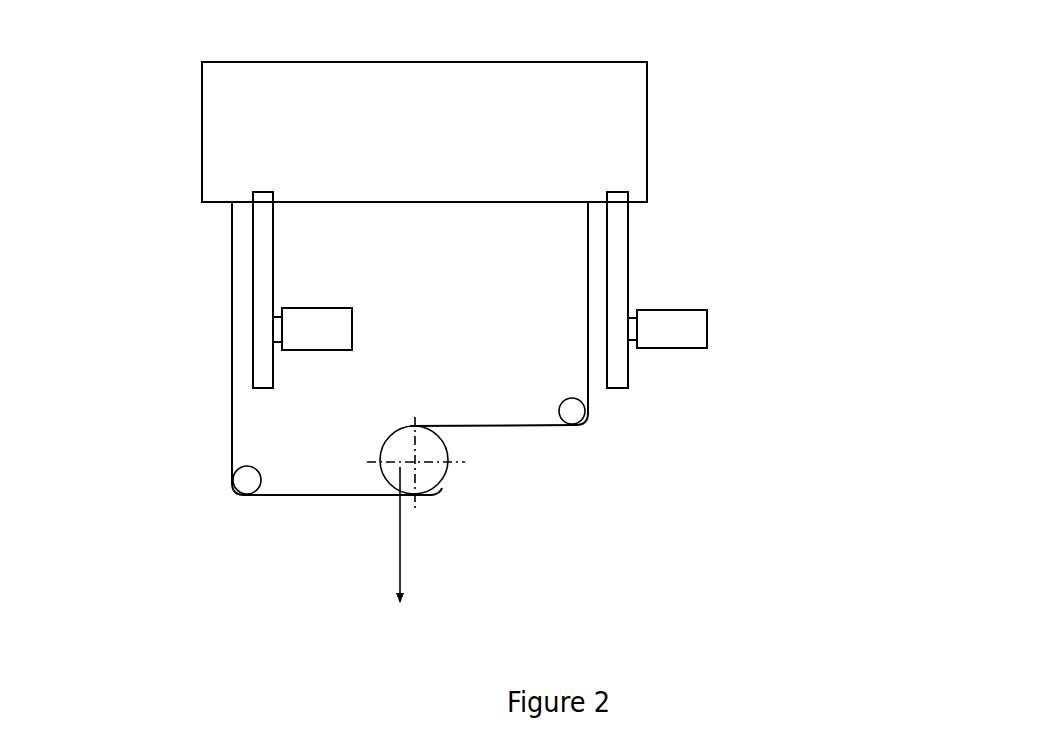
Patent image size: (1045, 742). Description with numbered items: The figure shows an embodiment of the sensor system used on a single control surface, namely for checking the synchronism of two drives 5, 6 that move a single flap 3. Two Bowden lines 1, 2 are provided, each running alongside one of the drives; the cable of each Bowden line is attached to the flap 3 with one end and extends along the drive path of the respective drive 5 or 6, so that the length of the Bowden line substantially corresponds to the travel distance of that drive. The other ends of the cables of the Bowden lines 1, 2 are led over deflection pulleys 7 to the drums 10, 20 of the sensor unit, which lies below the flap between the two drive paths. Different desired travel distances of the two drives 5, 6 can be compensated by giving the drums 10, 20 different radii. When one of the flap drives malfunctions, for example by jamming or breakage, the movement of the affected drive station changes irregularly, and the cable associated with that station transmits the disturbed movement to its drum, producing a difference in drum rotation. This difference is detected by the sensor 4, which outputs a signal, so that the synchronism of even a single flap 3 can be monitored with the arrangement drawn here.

The Bowden line 1 is at (518, 426).
The Bowden line 2 is at (232, 421).
The flap 3 is at (573, 77).
The sensor 4 is at (462, 488).
The drive 5 is at (359, 305).
The drive 6 is at (713, 303).
The deflection pulley 7 is at (220, 497).
The drum 10 is at (422, 482).
The drum 20 is at (422, 482).